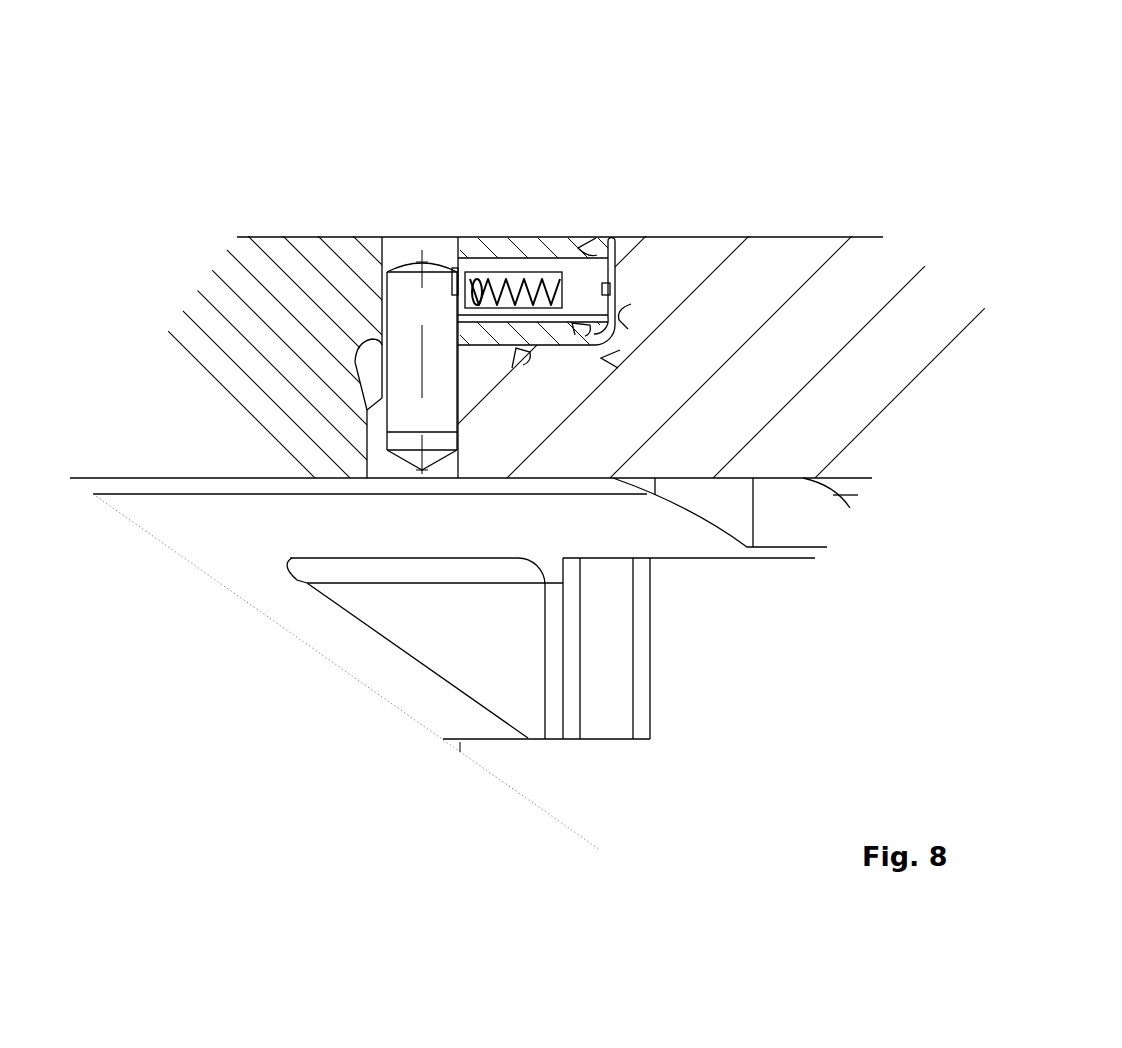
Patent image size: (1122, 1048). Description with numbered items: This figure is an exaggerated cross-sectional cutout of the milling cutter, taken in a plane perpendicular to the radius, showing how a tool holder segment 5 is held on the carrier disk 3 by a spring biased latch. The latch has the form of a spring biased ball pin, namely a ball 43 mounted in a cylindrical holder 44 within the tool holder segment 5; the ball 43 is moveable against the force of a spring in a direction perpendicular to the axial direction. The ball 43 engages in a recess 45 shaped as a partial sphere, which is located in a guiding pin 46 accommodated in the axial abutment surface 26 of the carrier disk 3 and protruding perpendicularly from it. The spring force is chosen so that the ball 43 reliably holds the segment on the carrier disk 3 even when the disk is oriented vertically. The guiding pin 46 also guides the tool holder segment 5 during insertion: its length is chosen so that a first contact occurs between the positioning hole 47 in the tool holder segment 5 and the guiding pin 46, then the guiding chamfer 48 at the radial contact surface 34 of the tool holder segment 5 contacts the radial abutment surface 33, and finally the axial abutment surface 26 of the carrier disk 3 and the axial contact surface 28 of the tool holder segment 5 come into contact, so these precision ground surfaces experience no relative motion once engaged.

The carrier disk 3 is at (582, 438).
The tool holder segment 5 is at (290, 317).
The axial abutment surface 26 is at (572, 322).
The axial contact surface 28 is at (515, 345).
The radial abutment surface 33 is at (602, 257).
The radial contact surface 34 is at (613, 328).
The ball 43 is at (473, 280).
The cylindrical holder 44 is at (590, 300).
The recess 45 is at (455, 292).
The guiding pin 46 is at (405, 313).
The positioning hole 47 is at (395, 249).
The guiding chamfer 48 is at (615, 355).